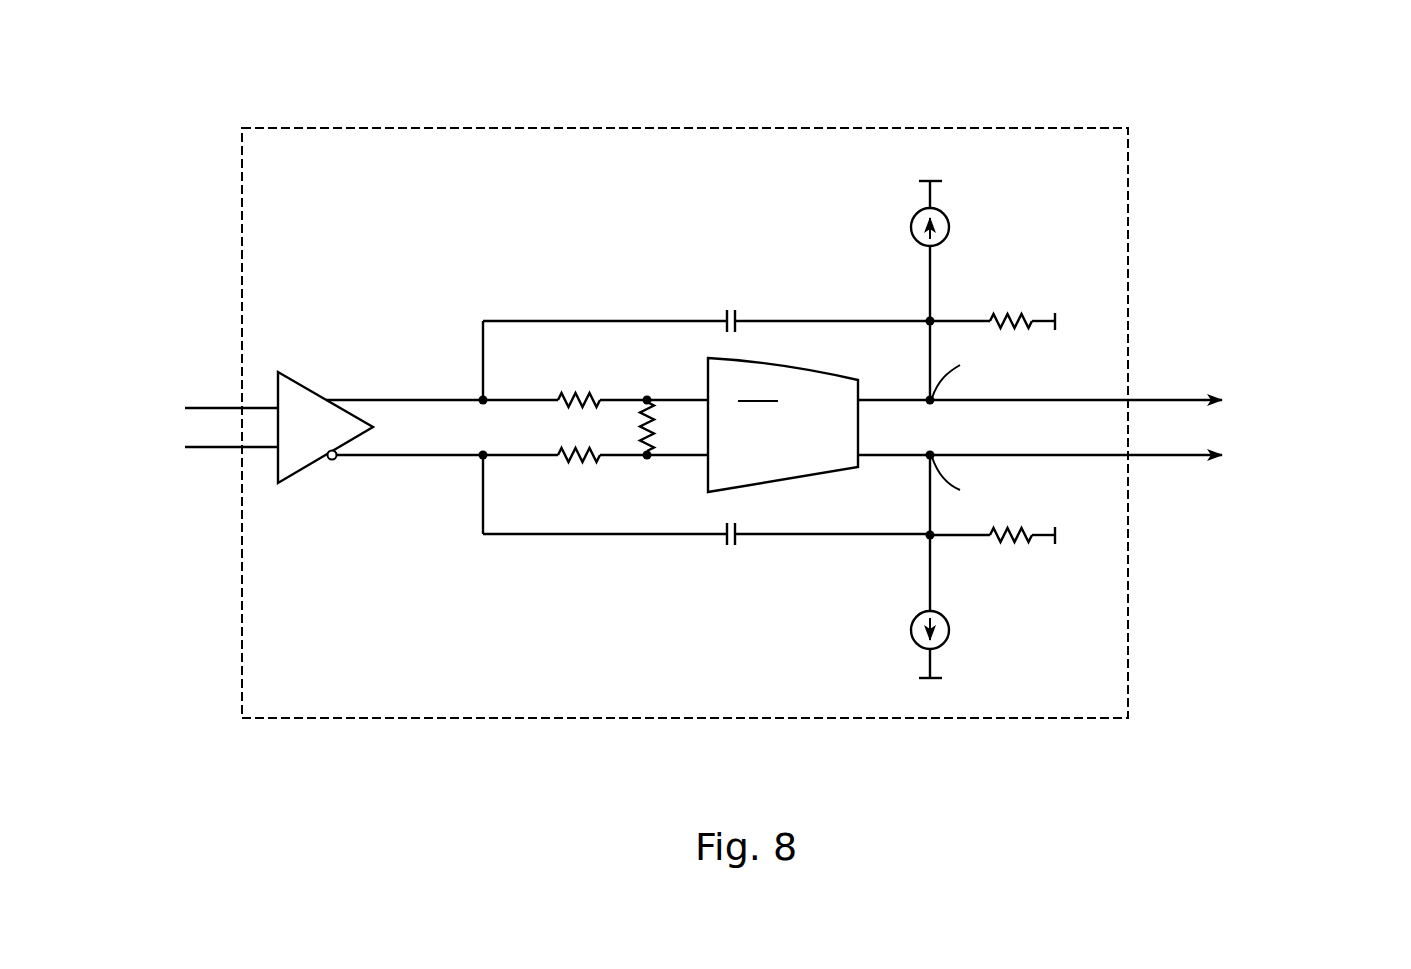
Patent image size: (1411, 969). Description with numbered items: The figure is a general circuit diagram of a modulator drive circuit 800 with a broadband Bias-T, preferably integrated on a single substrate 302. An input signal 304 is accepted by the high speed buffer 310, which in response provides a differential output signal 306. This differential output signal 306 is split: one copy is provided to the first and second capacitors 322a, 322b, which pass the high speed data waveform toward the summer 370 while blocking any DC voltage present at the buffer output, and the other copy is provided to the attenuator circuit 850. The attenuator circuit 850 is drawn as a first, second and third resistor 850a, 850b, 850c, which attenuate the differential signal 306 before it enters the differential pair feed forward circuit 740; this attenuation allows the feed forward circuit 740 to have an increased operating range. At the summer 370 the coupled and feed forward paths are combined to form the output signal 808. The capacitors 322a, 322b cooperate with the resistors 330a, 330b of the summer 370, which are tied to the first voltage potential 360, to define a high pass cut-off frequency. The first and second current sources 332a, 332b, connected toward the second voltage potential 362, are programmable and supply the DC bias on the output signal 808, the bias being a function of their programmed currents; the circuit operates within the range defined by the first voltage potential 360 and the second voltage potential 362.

The modulator drive circuit 800 is at (372, 127).
The substrate 302 is at (317, 187).
The input signal 304 is at (136, 427).
The differential output signal 306 is at (440, 393).
The high speed buffer 310 is at (297, 382).
The first capacitor 322a is at (722, 321).
The second capacitor 322b is at (722, 536).
The resistor 330a is at (1028, 326).
The resistor 330b is at (1032, 538).
The first current source 332a is at (911, 227).
The second current source 332b is at (911, 634).
The first voltage potential 360 is at (1053, 326).
The second voltage potential 362 is at (937, 181).
The summer 370 is at (964, 433).
The feed forward circuit 740 is at (783, 425).
The output signal 808 is at (1266, 403).
The attenuator circuit 850 is at (604, 384).
The first resistor 850a is at (557, 400).
The second resistor 850b is at (652, 445).
The third resistor 850c is at (562, 455).